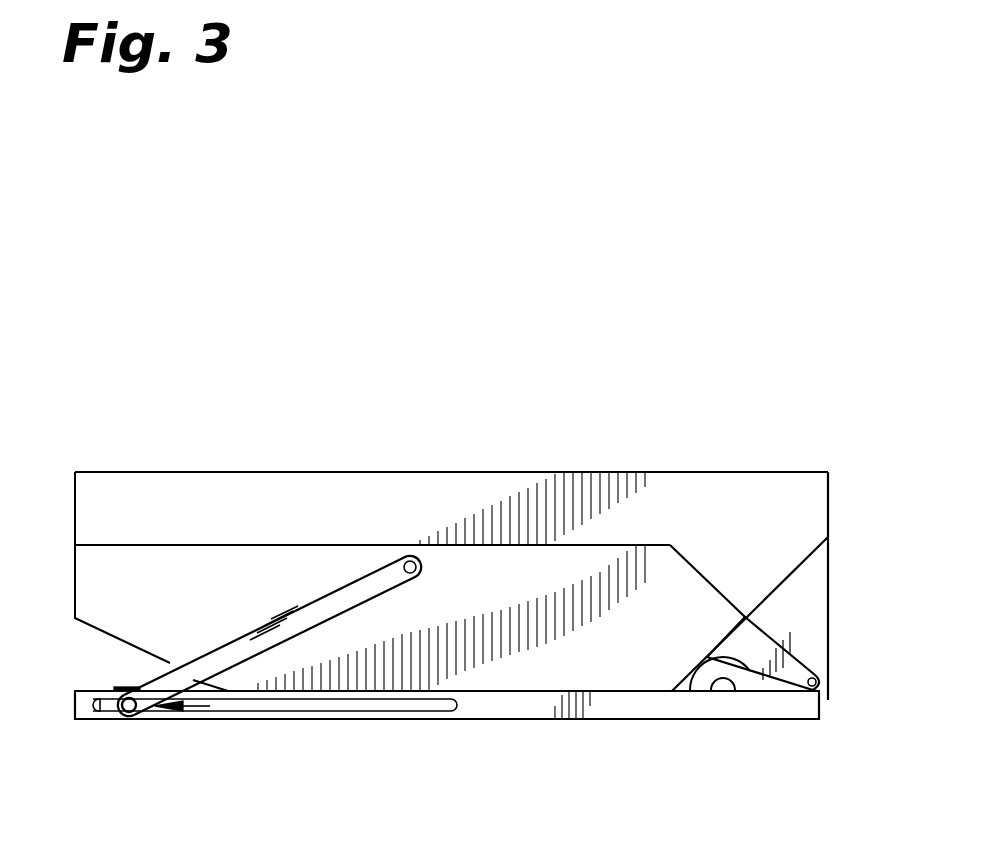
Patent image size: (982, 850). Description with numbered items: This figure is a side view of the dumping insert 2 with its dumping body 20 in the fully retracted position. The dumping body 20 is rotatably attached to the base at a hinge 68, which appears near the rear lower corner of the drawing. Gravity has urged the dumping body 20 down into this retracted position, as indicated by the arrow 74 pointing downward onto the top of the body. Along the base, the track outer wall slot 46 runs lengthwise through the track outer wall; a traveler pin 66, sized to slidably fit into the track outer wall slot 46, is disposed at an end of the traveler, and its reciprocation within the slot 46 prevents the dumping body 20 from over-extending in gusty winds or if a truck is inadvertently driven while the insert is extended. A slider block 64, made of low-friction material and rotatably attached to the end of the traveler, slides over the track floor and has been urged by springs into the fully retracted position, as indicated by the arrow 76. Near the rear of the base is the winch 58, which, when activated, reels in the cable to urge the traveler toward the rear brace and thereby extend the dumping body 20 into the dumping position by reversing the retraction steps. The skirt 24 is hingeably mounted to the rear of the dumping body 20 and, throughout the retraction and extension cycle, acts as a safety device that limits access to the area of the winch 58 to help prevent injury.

The dumping insert 2 is at (675, 267).
The dumping body 20 is at (388, 497).
The skirt 24 is at (828, 593).
The track outer wall slot 46 is at (290, 704).
The winch 58 is at (689, 692).
The slider block 64 is at (113, 708).
The traveler pin 66 is at (136, 712).
The hinge 68 is at (797, 692).
The arrow 74 is at (120, 462).
The arrow 76 is at (193, 712).